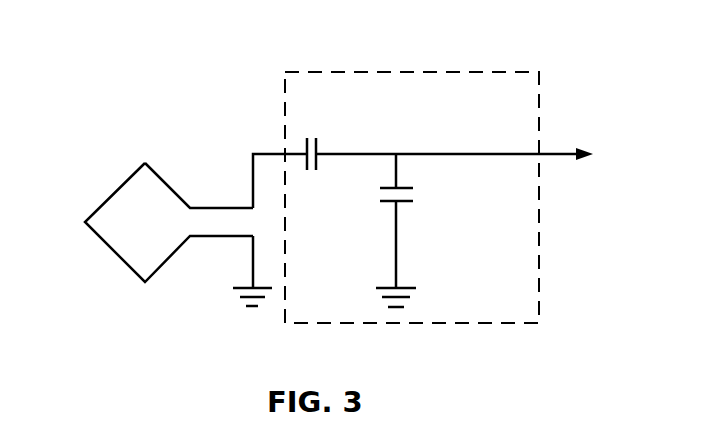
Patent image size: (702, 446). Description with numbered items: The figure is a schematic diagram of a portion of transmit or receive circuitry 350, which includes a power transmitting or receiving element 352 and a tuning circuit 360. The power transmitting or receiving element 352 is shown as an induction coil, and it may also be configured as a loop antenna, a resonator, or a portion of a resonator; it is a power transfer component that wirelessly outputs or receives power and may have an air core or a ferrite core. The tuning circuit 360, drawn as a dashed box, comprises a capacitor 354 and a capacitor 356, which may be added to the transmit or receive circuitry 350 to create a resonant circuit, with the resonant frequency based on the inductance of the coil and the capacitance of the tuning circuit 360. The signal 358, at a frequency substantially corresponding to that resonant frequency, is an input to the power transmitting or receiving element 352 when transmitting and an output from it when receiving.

The transmit or receive circuitry 350 is at (169, 62).
The power transmitting or receiving element 352 is at (115, 194).
The capacitor 354 is at (317, 142).
The capacitor 356 is at (402, 204).
The signal 358 is at (433, 154).
The tuning circuit 360 is at (521, 72).